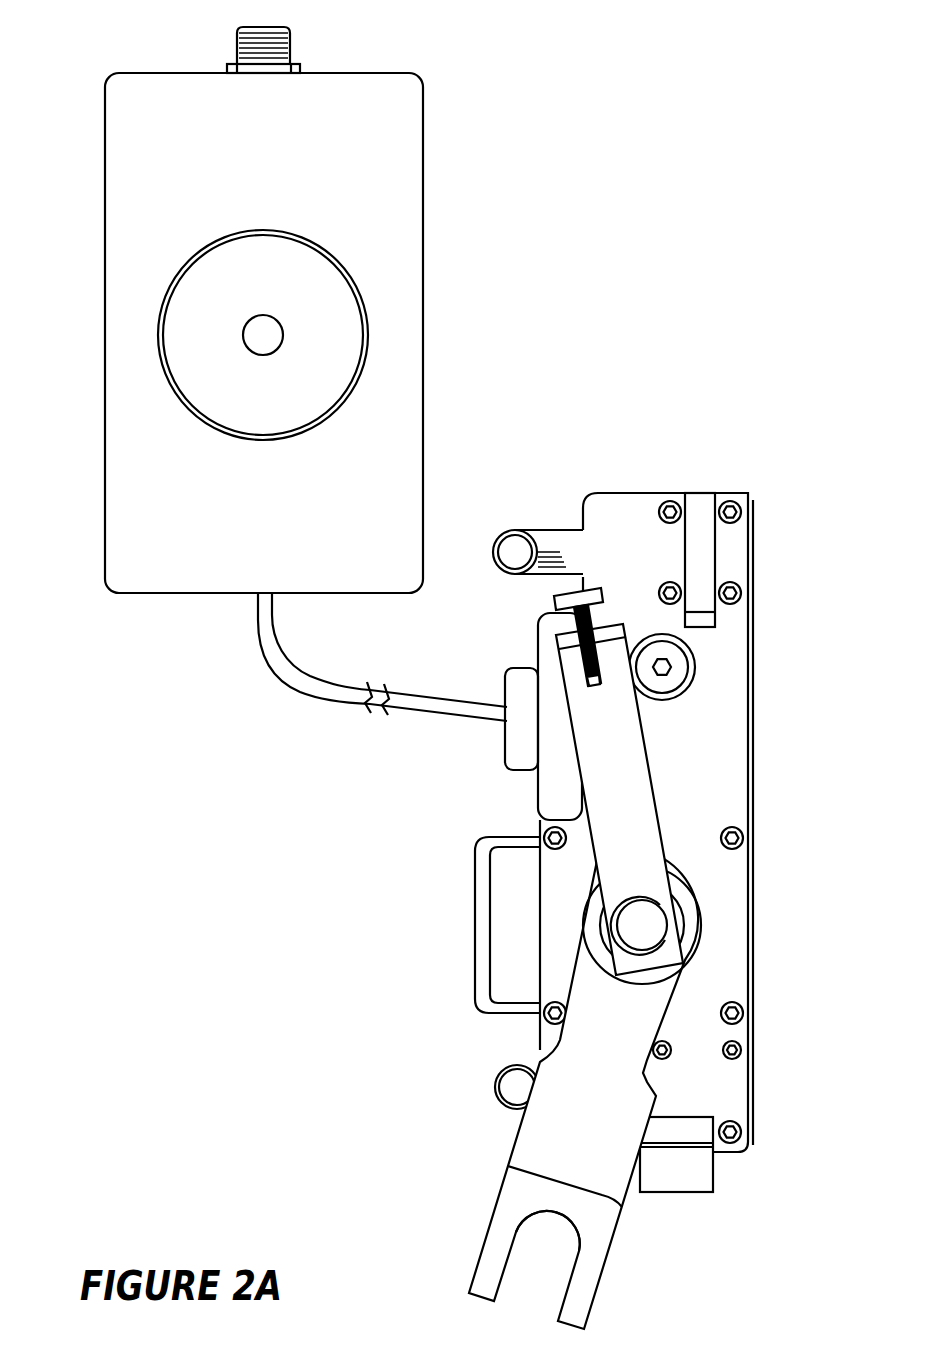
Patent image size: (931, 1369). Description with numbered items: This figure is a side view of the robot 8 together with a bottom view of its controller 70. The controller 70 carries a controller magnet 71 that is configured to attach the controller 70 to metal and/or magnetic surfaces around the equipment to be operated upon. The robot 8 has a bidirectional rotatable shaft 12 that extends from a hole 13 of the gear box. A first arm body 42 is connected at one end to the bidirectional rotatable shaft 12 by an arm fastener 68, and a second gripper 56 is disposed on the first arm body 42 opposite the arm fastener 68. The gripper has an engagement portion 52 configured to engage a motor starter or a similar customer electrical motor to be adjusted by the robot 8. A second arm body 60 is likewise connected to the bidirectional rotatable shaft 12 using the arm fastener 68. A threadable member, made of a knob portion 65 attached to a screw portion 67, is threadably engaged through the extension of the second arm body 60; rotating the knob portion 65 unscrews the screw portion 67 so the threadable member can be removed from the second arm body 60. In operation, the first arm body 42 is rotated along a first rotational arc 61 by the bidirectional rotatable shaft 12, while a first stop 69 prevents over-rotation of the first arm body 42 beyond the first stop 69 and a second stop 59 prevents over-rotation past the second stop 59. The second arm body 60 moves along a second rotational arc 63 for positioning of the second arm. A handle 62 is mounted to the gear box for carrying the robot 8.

The robot 8 is at (746, 204).
The bidirectional rotatable shaft 12 is at (640, 918).
The hole 13 is at (695, 894).
The first arm body 42 is at (513, 1135).
The engagement portion 52 is at (560, 1288).
The second gripper 56 is at (490, 1222).
The second stop 59 is at (693, 672).
The second arm body 60 is at (650, 778).
The first rotational arc 61 is at (385, 1241).
The handle 62 is at (475, 915).
The second rotational arc 63 is at (553, 641).
The knob portion 65 is at (590, 590).
The screw portion 67 is at (600, 618).
The arm fastener 68 is at (657, 957).
The first stop 69 is at (675, 1193).
The controller 70 is at (423, 158).
The controller magnet 71 is at (190, 357).